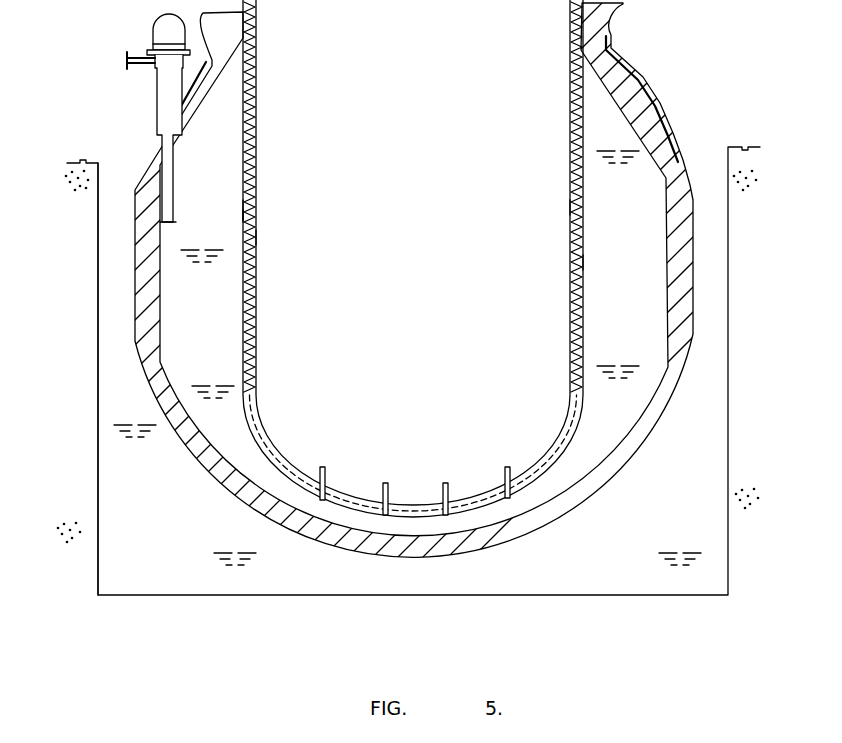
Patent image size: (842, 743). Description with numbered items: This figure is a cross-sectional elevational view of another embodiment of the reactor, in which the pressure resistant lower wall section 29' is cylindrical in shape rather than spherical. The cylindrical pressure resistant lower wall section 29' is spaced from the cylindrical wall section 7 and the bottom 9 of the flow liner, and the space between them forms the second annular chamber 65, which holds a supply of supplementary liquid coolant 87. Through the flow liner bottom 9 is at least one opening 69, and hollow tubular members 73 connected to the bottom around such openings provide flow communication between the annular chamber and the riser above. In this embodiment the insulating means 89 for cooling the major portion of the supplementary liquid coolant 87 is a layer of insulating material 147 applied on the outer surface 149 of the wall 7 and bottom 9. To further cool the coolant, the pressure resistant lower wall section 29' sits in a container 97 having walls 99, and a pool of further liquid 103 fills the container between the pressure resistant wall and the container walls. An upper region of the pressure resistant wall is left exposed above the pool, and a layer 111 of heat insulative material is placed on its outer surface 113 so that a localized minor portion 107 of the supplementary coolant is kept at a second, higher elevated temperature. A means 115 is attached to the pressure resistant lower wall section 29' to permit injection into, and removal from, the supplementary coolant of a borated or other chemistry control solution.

The cylindrical wall section 7 is at (258, 303).
The bottom 9 is at (358, 490).
The cylindrically shaped pressure resistant lower wall section 29' is at (132, 118).
The second annular chamber 65 is at (197, 378).
The opening 69 is at (483, 493).
The hollow tubular members 73 is at (395, 495).
The supplementary liquid coolant 87 is at (215, 324).
The thermal insulation means 89 is at (240, 216).
The container 97 is at (93, 330).
The walls 99 is at (98, 264).
The pool of further liquid 103 is at (152, 525).
The localized minor portion of supplementary liquid coolant 107 is at (213, 153).
The layer of heat insulative material 111 is at (665, 104).
The outer surface 113 is at (640, 76).
The means for injection and removal of chemistry control solution 115 is at (120, 42).
The layer of insulating material 147 is at (258, 209).
The outer surface 149 is at (258, 238).